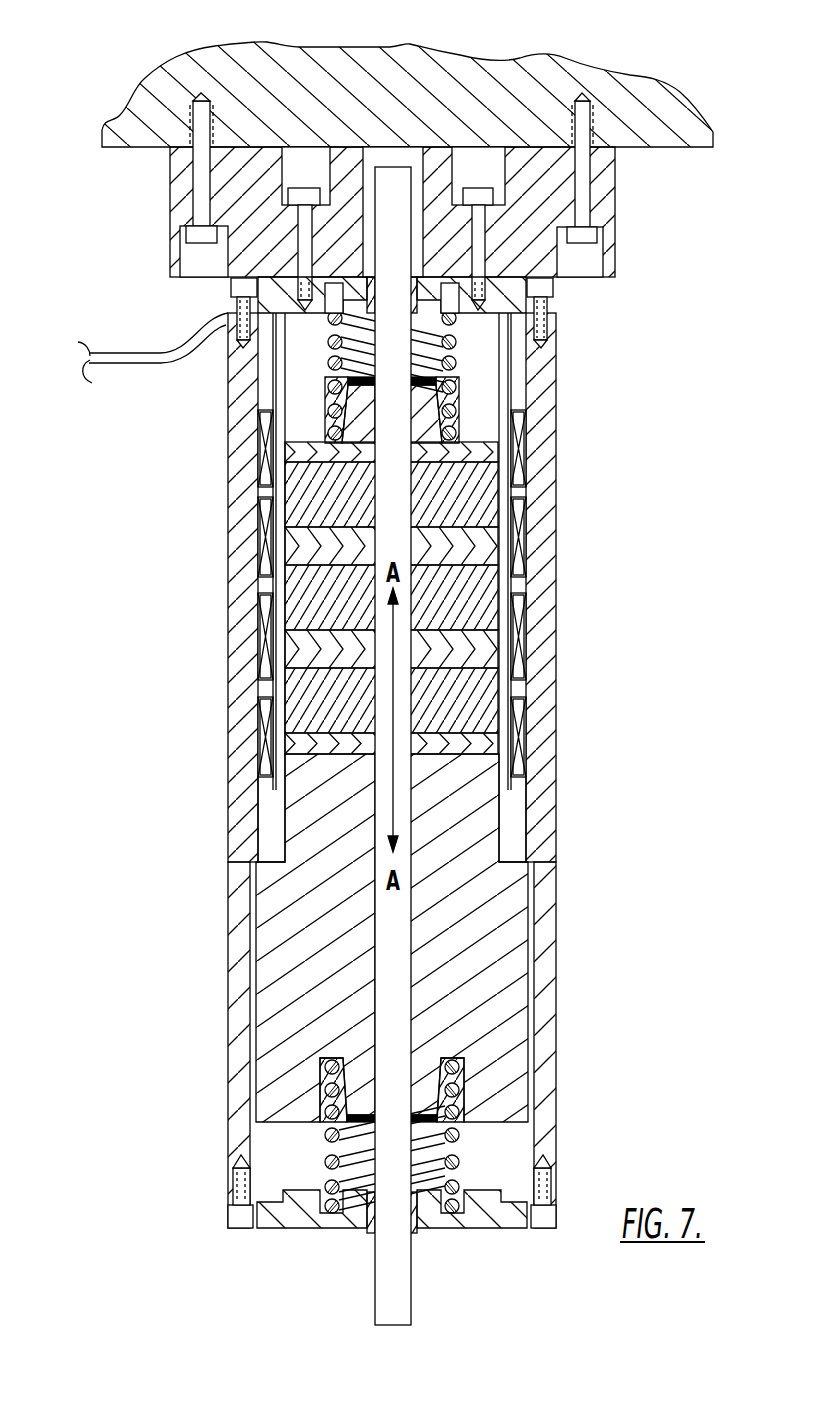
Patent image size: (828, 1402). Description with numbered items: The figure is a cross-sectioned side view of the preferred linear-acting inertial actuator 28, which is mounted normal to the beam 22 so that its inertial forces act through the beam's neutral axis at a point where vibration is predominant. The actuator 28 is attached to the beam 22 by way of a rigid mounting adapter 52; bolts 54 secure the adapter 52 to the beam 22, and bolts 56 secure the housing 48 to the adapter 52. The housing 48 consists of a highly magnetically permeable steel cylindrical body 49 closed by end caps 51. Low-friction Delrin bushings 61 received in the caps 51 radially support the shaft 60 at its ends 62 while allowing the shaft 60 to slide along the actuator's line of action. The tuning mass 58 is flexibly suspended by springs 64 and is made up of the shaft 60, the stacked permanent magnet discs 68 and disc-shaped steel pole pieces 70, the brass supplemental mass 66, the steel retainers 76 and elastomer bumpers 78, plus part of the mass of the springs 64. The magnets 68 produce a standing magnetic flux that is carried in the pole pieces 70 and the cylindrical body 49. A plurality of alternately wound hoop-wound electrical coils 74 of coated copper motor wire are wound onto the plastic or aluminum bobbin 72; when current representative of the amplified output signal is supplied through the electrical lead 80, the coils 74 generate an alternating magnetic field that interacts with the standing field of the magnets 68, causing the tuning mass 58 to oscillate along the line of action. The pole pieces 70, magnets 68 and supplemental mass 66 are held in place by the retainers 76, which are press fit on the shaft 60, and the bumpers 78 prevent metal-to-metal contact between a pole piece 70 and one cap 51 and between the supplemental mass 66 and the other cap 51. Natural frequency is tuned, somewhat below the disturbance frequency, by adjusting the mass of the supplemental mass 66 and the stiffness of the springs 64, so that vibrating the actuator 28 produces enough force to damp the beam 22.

The beam 22 is at (663, 143).
The linear-acting inertial actuator 28 is at (403, 770).
The housing 48 is at (558, 496).
The cylindrical body 49 is at (535, 727).
The end cap 51 is at (540, 290).
The mounting adapter 52 is at (607, 199).
The bolts 54 is at (200, 243).
The bolts 56 is at (302, 187).
The tuning mass 58 is at (280, 812).
The shaft 60 is at (414, 928).
The bushings 61 is at (370, 282).
The shaft ends 62 is at (392, 165).
The springs 64 is at (325, 362).
The supplemental mass 66 is at (512, 1030).
The magnets 68 is at (483, 490).
The pole pieces 70 is at (486, 450).
The bobbin 72 is at (334, 593).
The electrical coils 74 is at (258, 446).
The retainers 76 is at (452, 400).
The bumpers 78 is at (348, 381).
The electrical lead 80 is at (140, 365).